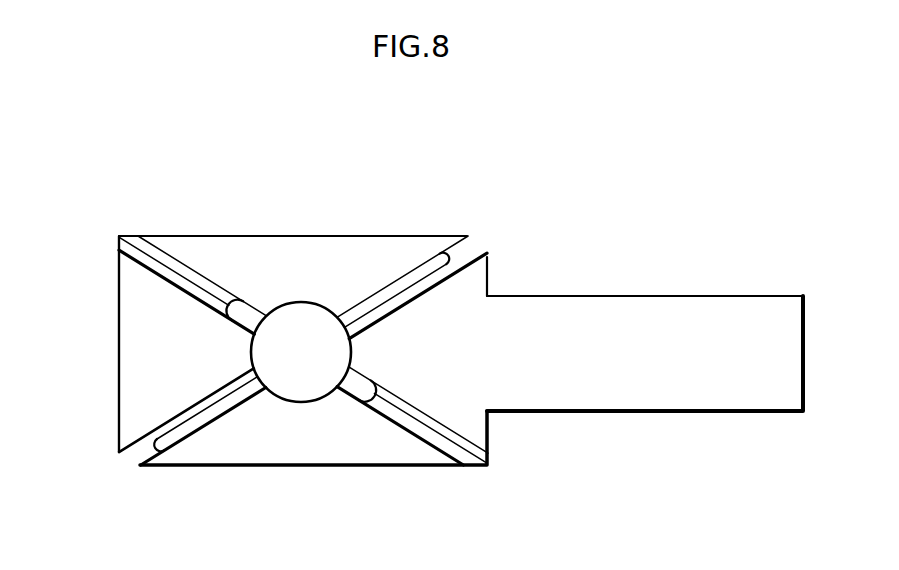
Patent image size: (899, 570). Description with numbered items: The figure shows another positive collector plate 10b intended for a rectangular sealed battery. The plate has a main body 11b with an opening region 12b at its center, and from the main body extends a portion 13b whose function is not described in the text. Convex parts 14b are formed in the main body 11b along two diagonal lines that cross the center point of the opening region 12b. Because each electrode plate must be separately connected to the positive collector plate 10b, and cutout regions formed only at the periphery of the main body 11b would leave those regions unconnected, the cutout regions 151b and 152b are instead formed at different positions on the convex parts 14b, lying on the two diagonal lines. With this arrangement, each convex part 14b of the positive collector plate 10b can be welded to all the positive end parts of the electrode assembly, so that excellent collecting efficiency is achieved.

The positive collector plate 10b is at (245, 222).
The main body 11b is at (130, 333).
The opening region 12b is at (270, 352).
The arm portion 13b is at (718, 304).
The convex part 14b is at (401, 280).
The cutout region 151b is at (470, 250).
The cutout region 152b is at (356, 386).